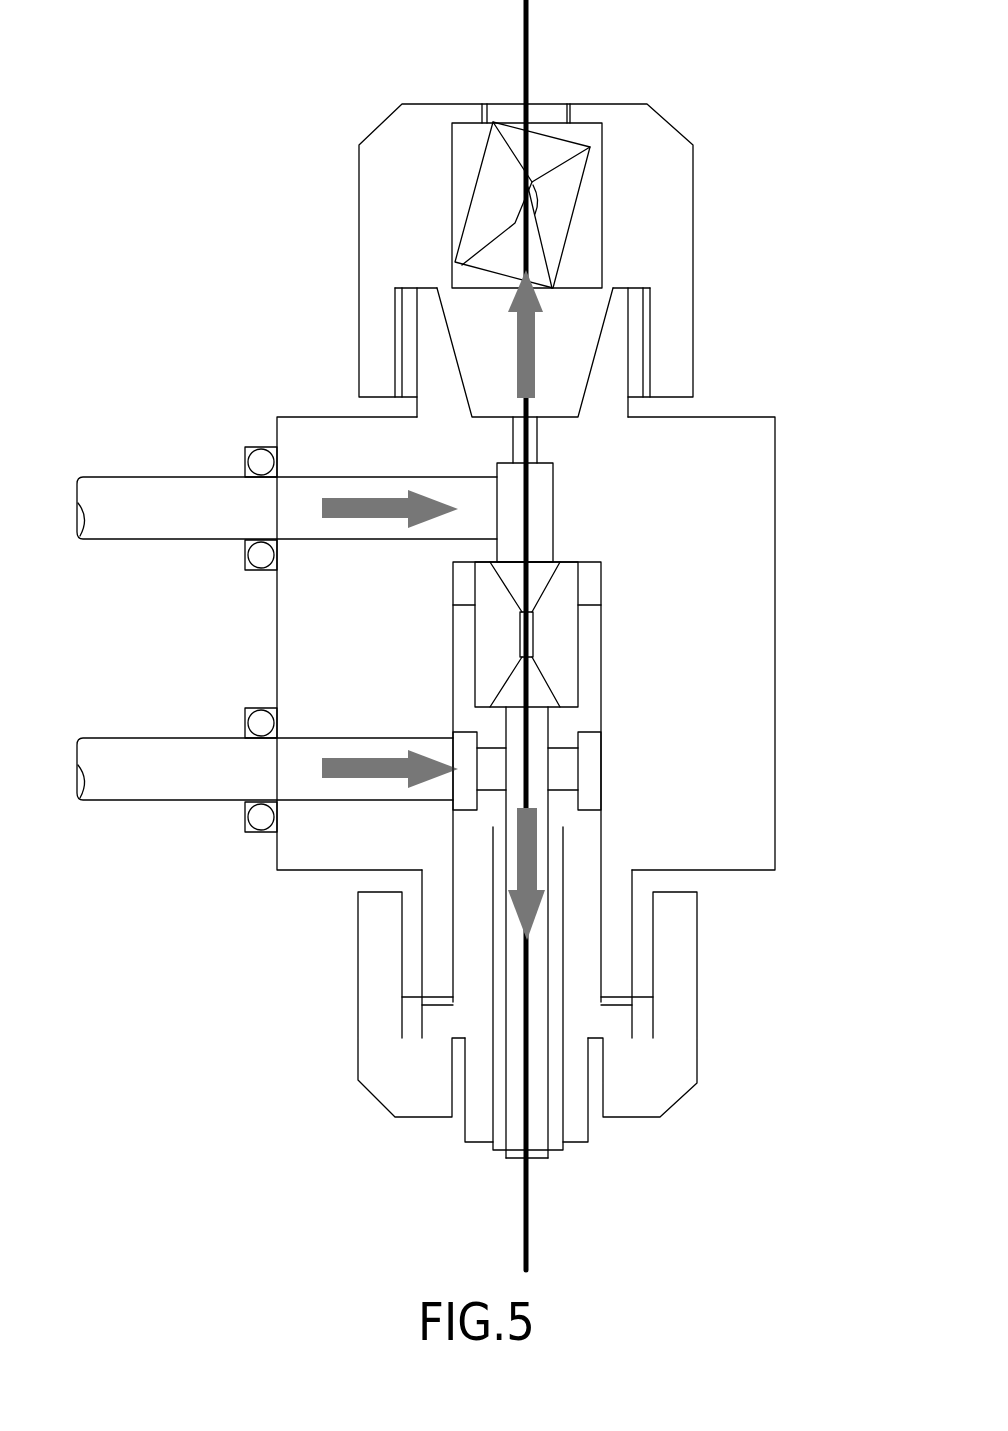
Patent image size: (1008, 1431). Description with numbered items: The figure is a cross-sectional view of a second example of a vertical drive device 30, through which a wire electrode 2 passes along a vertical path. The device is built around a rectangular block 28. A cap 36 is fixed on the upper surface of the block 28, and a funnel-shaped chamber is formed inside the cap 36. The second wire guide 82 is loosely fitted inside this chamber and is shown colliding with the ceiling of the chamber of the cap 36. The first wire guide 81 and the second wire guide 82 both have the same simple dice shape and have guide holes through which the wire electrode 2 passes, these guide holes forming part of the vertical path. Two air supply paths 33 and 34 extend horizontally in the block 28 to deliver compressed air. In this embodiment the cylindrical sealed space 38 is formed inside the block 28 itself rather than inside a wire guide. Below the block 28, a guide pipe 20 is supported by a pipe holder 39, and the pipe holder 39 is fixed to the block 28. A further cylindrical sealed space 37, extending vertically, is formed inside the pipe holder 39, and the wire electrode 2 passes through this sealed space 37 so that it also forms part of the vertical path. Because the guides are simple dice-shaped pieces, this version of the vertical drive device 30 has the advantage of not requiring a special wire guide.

The wire electrode 2 is at (532, 48).
The guide pipe 20 is at (560, 1103).
The block 28 is at (312, 422).
The vertical drive device 30 is at (265, 217).
The air supply path 33 is at (143, 797).
The air supply path 34 is at (168, 485).
The cap 36 is at (690, 257).
The sealed space 37 is at (538, 763).
The cylindrical sealed space 38 is at (545, 503).
The pipe holder 39 is at (585, 908).
The first wire guide 81 is at (568, 638).
The second wire guide 82 is at (545, 140).